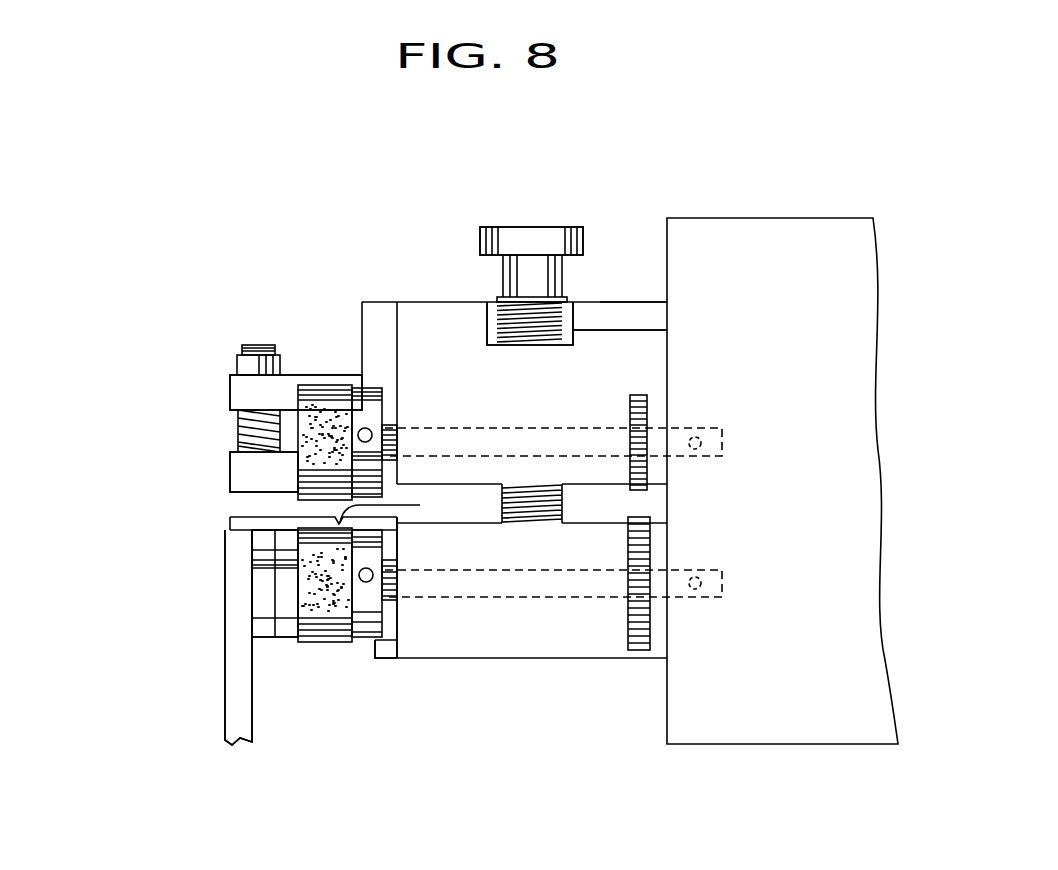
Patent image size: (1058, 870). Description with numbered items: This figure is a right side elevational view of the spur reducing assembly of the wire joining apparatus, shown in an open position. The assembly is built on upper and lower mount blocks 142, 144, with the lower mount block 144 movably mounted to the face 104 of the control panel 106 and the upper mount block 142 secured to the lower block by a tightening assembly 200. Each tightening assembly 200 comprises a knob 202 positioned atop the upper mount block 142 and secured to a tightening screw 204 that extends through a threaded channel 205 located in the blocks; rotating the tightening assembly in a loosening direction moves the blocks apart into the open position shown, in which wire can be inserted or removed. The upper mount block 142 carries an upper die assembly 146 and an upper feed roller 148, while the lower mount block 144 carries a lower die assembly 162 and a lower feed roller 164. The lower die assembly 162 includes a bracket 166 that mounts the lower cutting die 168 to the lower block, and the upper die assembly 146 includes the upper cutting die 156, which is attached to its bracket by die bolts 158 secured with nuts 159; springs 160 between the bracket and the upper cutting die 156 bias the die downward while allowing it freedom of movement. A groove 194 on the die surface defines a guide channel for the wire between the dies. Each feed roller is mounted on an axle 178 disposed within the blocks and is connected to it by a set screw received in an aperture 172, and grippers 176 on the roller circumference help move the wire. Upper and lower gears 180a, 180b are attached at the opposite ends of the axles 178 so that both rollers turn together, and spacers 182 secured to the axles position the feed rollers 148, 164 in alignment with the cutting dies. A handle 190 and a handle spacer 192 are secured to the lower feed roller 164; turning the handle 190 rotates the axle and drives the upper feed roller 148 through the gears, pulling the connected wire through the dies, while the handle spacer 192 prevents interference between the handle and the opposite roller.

The face 104 is at (660, 267).
The control panel 106 is at (737, 218).
The upper mount block 142 is at (448, 302).
The lower mount block 144 is at (637, 658).
The upper die assembly 146 is at (200, 458).
The upper feed roller 148 is at (365, 388).
The upper cutting die 156 is at (230, 472).
The die bolts 158 is at (258, 345).
The nuts 159 is at (235, 365).
The springs 160 is at (240, 425).
The lower die assembly 162 is at (197, 621).
The lower feed roller 164 is at (362, 637).
The bracket 166 is at (385, 660).
The lower cutting die 168 is at (230, 522).
The aperture 172 is at (372, 432).
The grippers 176 is at (337, 415).
The axle 178 is at (588, 427).
The upper gear 180a is at (650, 472).
The lower gear 180b is at (655, 538).
The spacers 182 is at (390, 455).
The handle 190 is at (228, 693).
The handle spacer 192 is at (263, 596).
The groove 194 is at (420, 505).
The tightening assembly 200 is at (440, 222).
The knob 202 is at (532, 228).
The tightening screw 204 is at (562, 502).
The threaded channel 205 is at (617, 330).